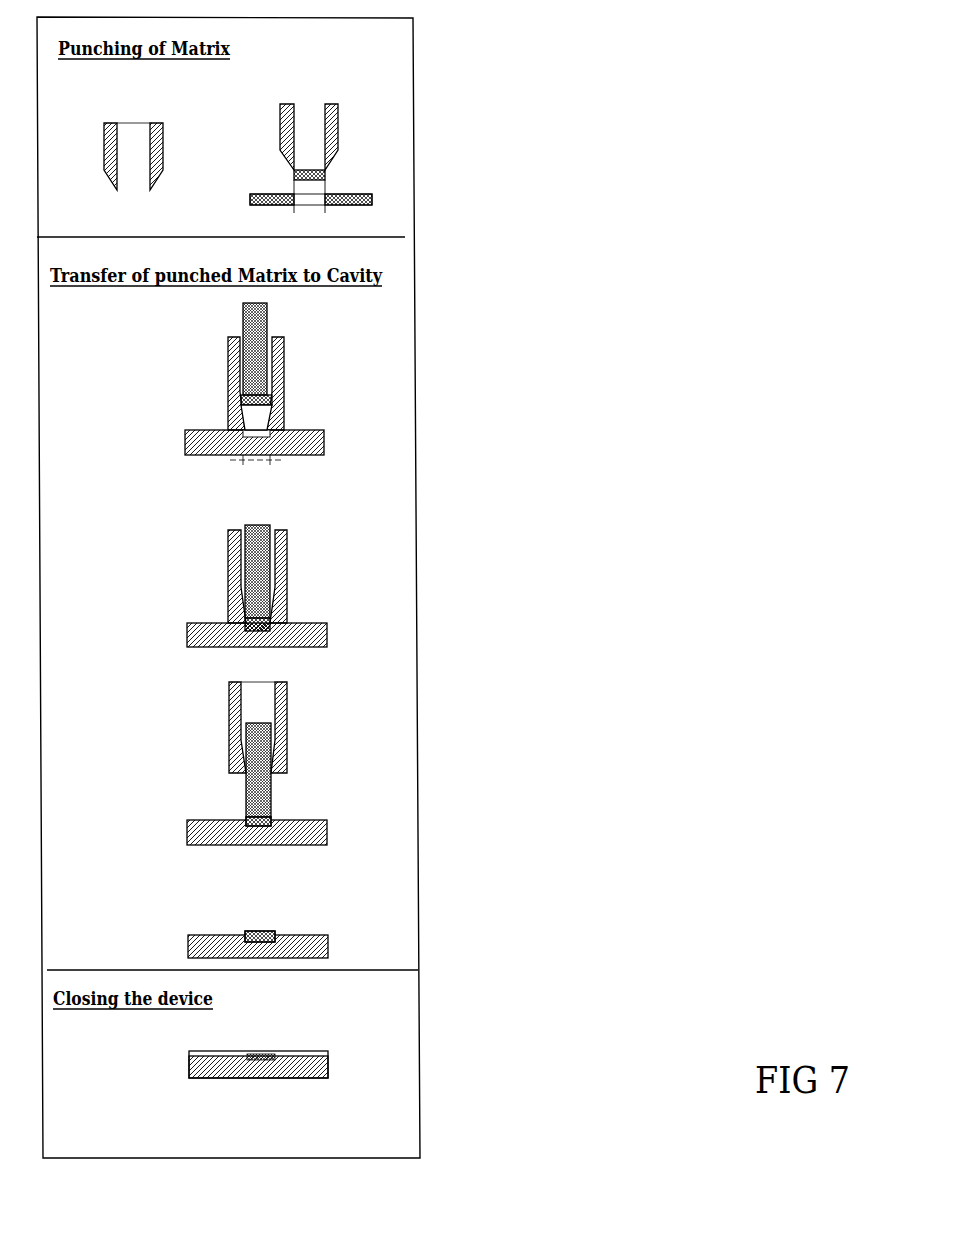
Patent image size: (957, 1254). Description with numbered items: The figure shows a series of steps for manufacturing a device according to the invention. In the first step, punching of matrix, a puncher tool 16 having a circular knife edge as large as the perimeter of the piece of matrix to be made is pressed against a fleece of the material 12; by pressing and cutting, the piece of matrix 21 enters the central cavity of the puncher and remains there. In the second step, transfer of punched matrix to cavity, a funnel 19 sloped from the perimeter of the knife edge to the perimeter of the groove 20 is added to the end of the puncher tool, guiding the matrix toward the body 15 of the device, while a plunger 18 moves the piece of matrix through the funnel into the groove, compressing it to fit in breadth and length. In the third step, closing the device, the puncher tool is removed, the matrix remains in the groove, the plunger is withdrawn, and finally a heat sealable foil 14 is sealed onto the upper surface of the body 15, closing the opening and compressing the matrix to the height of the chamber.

The fleece of the material 12 is at (370, 203).
The heat sealable foil 14 is at (322, 1048).
The body 15 is at (305, 443).
The puncher tool 16 is at (163, 143).
The plunger 18 is at (253, 348).
The funnel 19 is at (277, 405).
The groove 20 is at (253, 432).
The piece of matrix 21 is at (328, 167).